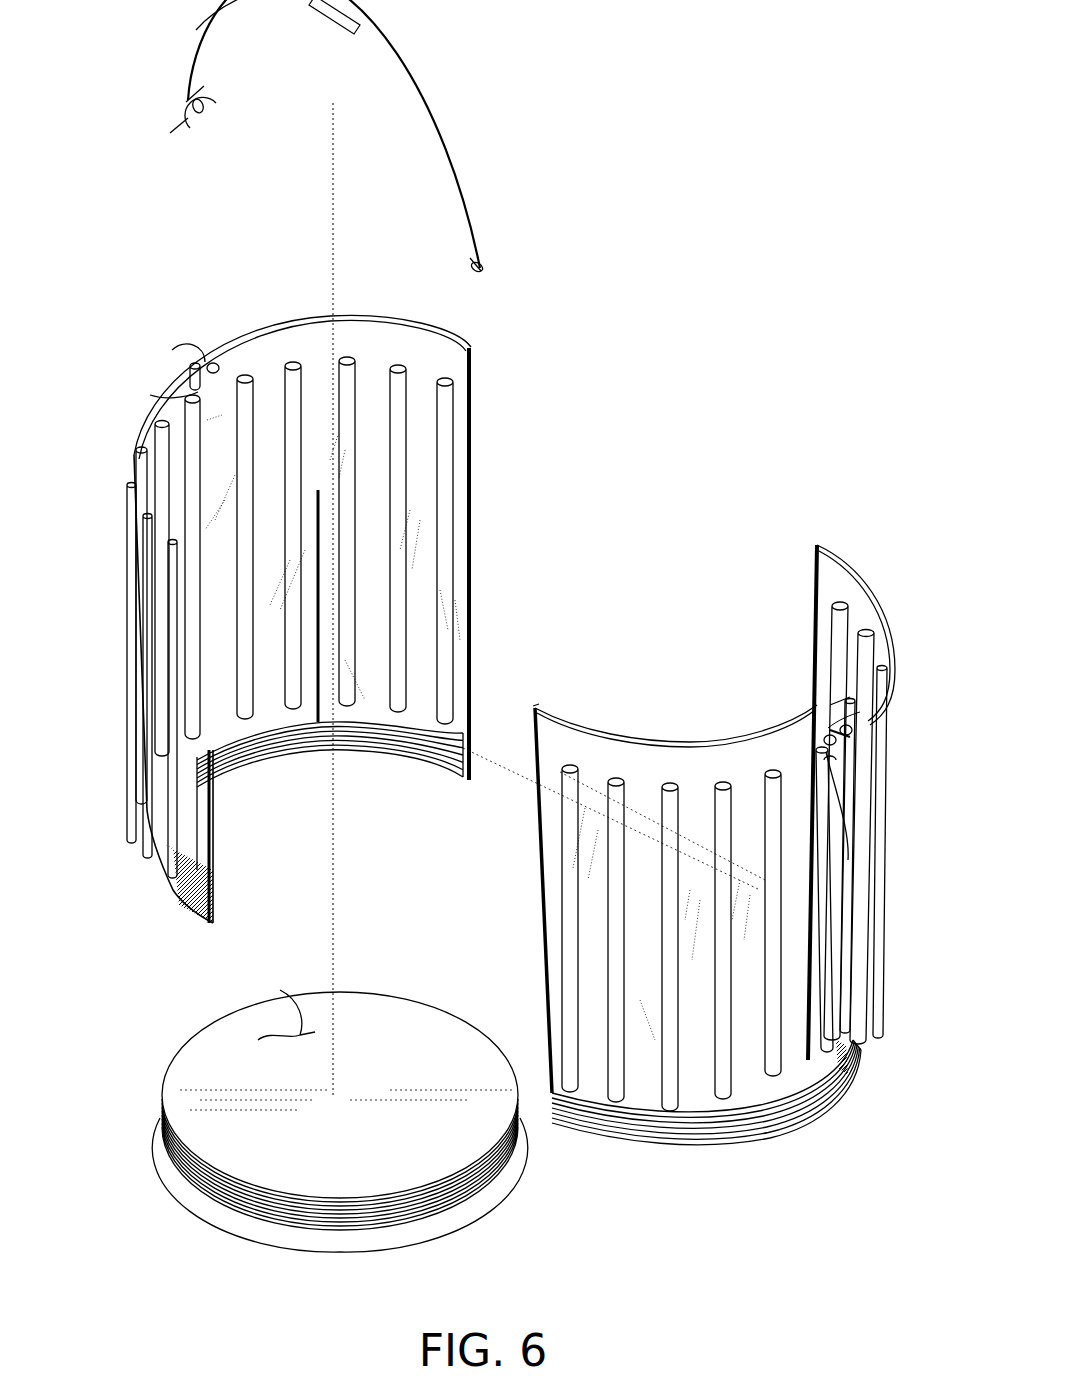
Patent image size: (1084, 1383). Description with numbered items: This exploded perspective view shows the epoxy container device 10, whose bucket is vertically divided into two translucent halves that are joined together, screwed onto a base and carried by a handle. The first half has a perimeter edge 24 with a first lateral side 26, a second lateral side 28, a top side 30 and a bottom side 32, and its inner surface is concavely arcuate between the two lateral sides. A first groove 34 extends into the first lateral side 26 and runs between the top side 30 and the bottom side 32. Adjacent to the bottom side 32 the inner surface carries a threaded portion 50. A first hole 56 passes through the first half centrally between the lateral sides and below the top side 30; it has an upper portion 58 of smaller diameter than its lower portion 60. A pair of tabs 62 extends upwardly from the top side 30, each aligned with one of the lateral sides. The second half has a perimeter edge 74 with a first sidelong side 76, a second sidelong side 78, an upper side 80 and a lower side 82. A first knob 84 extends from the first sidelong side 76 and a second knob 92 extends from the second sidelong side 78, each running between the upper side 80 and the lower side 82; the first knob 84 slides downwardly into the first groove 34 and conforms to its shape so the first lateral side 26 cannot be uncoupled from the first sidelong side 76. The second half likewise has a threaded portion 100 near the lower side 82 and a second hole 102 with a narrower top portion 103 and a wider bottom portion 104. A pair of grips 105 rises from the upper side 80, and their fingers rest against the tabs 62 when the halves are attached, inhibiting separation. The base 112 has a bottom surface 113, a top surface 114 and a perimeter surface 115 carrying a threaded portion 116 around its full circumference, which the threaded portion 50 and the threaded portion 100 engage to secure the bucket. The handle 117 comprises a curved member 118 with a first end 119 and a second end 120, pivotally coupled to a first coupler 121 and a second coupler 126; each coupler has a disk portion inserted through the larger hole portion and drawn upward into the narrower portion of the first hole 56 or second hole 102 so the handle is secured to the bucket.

The epoxy container device 10 is at (150, 137).
The perimeter edge 24 is at (472, 403).
The first lateral side 26 is at (474, 490).
The second lateral side 28 is at (225, 868).
The top side 30 is at (372, 300).
The bottom side 32 is at (452, 780).
The first groove 34 is at (213, 815).
The threaded portion 50 is at (345, 755).
The first hole 56 is at (150, 395).
The upper portion 58 is at (187, 350).
The lower portion 60 is at (218, 364).
The pair of tabs 62 is at (474, 352).
The perimeter edge 74 is at (812, 633).
The first sidelong side 76 is at (808, 697).
The second sidelong side 78 is at (545, 968).
The upper side 80 is at (610, 730).
The lower side 82 is at (822, 1118).
The first knob 84 is at (815, 577).
The second knob 92 is at (545, 905).
The threaded portion 100 is at (748, 1140).
The second hole 102 is at (830, 742).
The top portion 103 is at (890, 700).
The bottom portion 104 is at (850, 737).
The pair of grips 105 is at (535, 706).
The base 112 is at (375, 1130).
The bottom surface 113 is at (507, 1190).
The top surface 114 is at (290, 990).
The perimeter surface 115 is at (268, 1221).
The threaded portion 116 is at (170, 1140).
The handle 117 is at (470, 153).
The member 118 is at (200, 28).
The first end 119 is at (188, 100).
The second end 120 is at (486, 268).
The first coupler 121 is at (215, 112).
The second coupler 126 is at (469, 262).